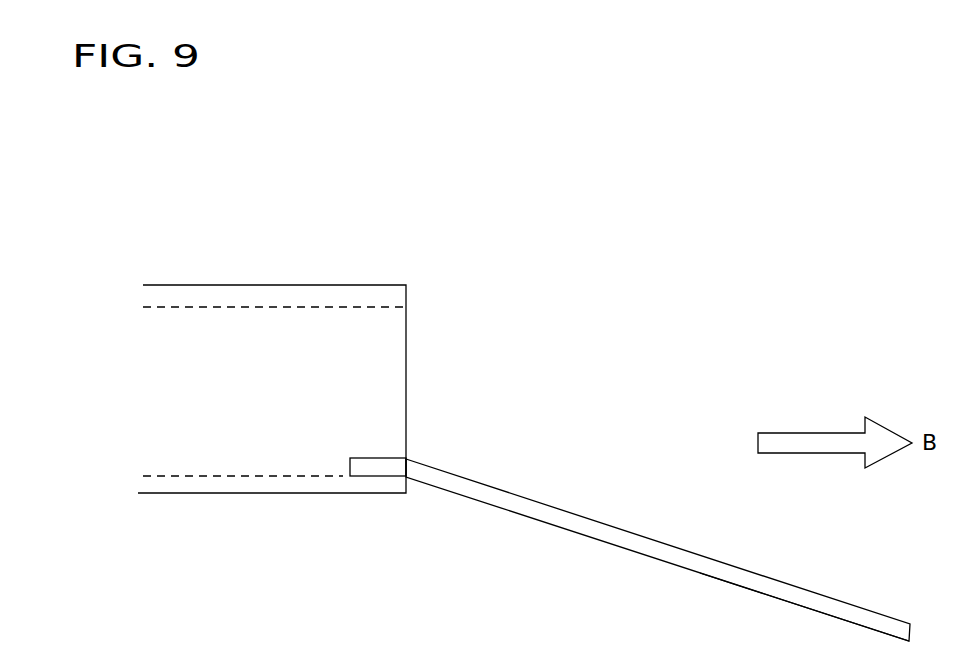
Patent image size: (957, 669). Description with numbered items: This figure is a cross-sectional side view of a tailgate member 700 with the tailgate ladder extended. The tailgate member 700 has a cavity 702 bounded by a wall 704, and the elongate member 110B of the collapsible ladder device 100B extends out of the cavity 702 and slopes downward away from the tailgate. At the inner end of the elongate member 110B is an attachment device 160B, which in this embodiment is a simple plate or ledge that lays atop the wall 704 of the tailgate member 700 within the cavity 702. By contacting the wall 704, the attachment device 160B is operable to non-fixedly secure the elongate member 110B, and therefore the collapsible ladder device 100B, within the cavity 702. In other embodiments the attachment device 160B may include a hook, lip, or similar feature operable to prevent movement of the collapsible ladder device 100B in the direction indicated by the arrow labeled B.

The tailgate member 700 is at (316, 258).
The cavity 702 is at (188, 389).
The wall 704 is at (227, 475).
The attachment device 160B is at (370, 458).
The collapsible ladder device 100B is at (576, 473).
The elongate member 110B is at (845, 603).